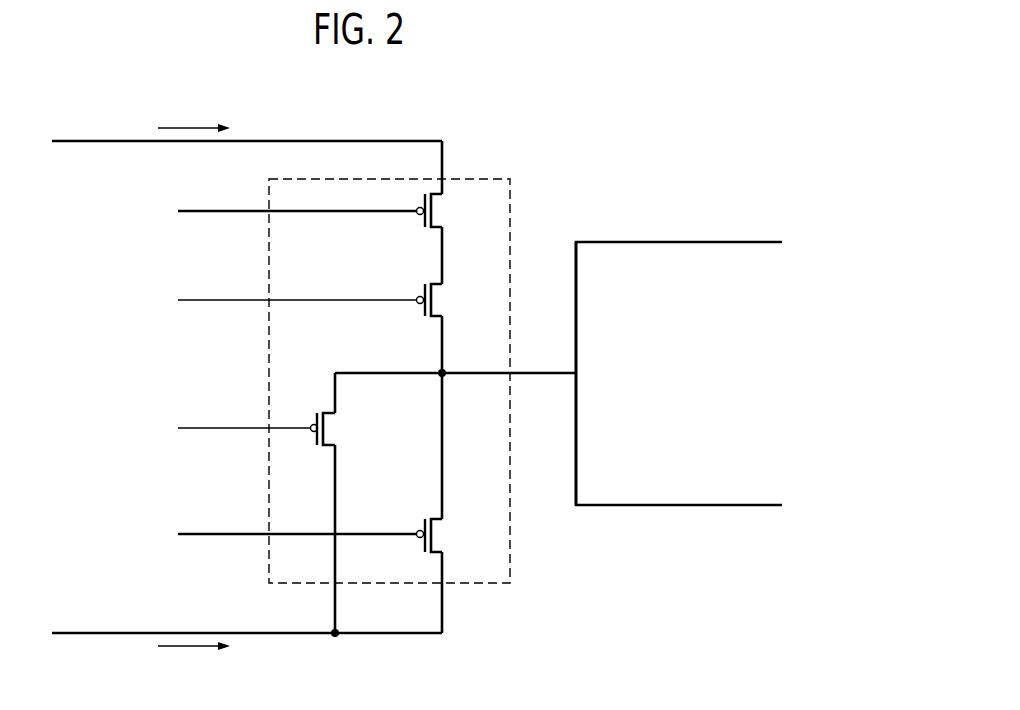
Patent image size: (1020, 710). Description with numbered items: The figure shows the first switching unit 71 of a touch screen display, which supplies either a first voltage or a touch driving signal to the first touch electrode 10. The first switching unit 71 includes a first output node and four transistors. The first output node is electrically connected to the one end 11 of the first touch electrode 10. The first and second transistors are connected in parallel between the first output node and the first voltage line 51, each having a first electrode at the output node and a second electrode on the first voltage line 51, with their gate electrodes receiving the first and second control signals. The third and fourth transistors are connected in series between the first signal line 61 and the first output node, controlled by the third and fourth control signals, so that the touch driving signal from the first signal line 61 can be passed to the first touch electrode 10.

The first touch electrode 10 is at (636, 241).
The one end of the first touch electrode 11 is at (565, 242).
The first voltage line 51 is at (92, 636).
The first signal line 61 is at (70, 140).
The first switching unit 71 is at (490, 178).